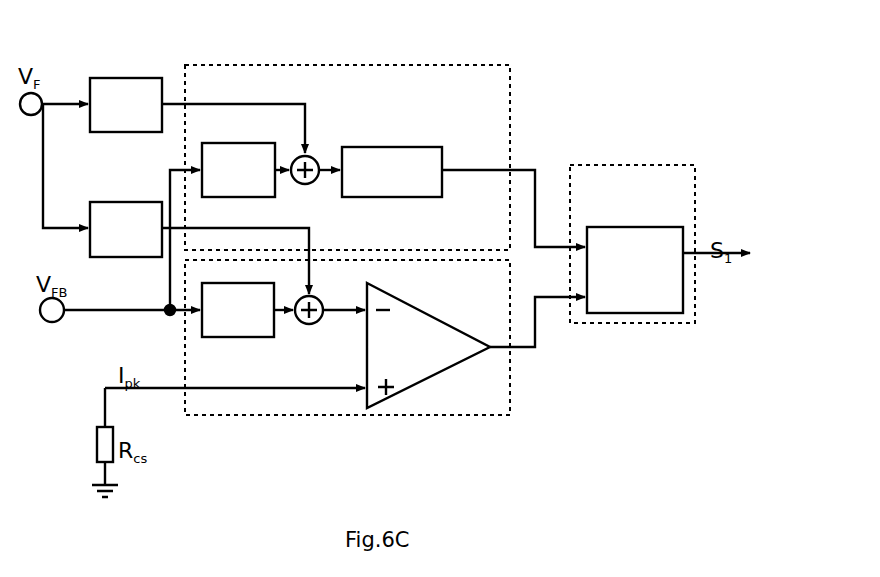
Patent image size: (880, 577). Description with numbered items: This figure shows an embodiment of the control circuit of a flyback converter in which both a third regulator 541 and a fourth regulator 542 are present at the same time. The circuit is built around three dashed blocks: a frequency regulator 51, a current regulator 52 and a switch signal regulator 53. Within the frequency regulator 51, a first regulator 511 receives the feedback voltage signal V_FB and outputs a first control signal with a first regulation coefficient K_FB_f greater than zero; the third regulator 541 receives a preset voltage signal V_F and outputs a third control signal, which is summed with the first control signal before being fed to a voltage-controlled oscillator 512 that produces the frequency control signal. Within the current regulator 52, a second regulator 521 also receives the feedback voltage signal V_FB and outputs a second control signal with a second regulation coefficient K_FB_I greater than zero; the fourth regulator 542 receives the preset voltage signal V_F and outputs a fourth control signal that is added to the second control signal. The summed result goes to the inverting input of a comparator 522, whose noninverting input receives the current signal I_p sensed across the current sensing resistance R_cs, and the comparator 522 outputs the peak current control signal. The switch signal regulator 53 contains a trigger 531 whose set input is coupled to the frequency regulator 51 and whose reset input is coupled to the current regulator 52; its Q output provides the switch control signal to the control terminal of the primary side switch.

The third regulator 541 is at (130, 78).
The fourth regulator 542 is at (130, 202).
The first regulator 511 is at (223, 197).
The voltage-controlled oscillator 512 is at (362, 147).
The frequency regulator 51 is at (347, 157).
The second regulator 521 is at (250, 337).
The comparator 522 is at (442, 322).
The current regulator 52 is at (347, 337).
The trigger 531 is at (615, 228).
The switch signal regulator 53 is at (632, 244).